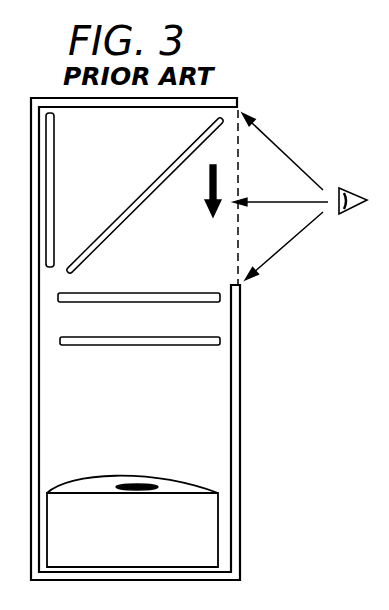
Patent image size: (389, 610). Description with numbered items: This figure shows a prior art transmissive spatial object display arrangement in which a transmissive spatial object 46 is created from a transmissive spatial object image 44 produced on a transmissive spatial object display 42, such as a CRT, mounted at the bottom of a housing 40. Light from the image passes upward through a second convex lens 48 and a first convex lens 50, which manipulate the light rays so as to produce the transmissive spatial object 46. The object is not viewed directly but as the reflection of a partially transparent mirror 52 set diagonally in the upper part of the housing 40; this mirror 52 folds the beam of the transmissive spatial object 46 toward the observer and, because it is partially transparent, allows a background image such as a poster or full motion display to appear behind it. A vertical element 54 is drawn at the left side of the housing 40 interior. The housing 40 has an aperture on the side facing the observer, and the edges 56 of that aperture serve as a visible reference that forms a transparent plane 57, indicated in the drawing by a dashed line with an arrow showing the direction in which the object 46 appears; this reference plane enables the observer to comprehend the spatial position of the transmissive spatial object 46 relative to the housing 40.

The housing 40 is at (240, 444).
The transmissive spatial object display 42 is at (218, 528).
The transmissive spatial object image 44 is at (120, 484).
The transmissive spatial object 46 is at (209, 180).
The second convex lens 48 is at (138, 346).
The first convex lens 50 is at (150, 292).
The partially transparent mirror 52 is at (147, 199).
The screen 54 is at (54, 165).
The edges of aperture 56 is at (237, 106).
The transparent plane 57 is at (238, 198).